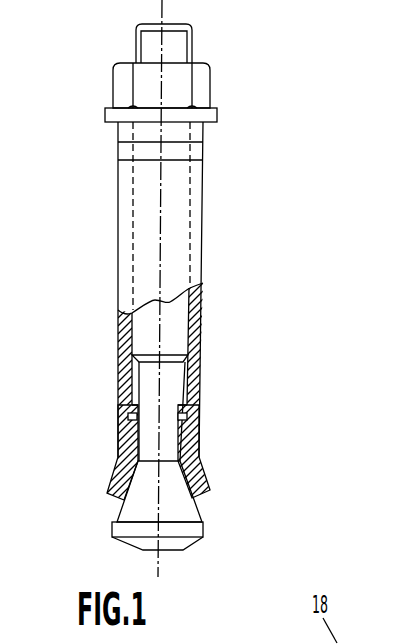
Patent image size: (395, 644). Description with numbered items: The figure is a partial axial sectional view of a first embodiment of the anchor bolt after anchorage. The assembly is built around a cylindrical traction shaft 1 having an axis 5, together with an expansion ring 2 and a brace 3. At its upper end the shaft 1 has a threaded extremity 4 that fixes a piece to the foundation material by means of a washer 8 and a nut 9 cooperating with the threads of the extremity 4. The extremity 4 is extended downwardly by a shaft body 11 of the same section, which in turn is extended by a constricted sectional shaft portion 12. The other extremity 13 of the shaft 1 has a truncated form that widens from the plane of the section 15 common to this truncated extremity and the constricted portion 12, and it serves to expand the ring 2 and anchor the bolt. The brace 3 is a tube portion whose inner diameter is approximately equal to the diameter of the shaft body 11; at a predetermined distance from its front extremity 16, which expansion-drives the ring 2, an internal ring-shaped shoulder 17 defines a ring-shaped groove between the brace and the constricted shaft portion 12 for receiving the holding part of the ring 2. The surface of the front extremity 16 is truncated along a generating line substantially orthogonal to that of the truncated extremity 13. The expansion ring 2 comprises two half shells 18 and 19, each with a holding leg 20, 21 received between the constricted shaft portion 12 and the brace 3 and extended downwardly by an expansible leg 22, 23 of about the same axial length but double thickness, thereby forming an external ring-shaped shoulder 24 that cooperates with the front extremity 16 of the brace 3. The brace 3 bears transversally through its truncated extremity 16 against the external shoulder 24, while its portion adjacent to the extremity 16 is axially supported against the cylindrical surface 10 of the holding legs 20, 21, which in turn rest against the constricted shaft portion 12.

The traction shaft 1 is at (189, 548).
The expansion ring 2 is at (226, 478).
The brace 3 is at (192, 320).
The threaded extremity 4 is at (190, 43).
The axis 5 is at (162, 3).
The washer 8 is at (215, 115).
The nut 9 is at (205, 80).
The cylindrical surface 10 is at (186, 413).
The shaft body 11 is at (175, 303).
The constricted sectional shaft portion 12 is at (168, 375).
The anchoring extremity 13 is at (183, 515).
The section plane 15 is at (200, 422).
The front extremity of the brace 16 is at (117, 467).
The internal ring-shaped shoulder 17 is at (122, 428).
The half shell 18 is at (120, 505).
The half shell 19 is at (214, 502).
The holding leg 20 is at (200, 438).
The holding leg 21 is at (118, 438).
The expansible leg 22 is at (212, 467).
The expansible leg 23 is at (108, 482).
The external ring-shaped shoulder 24 is at (200, 447).